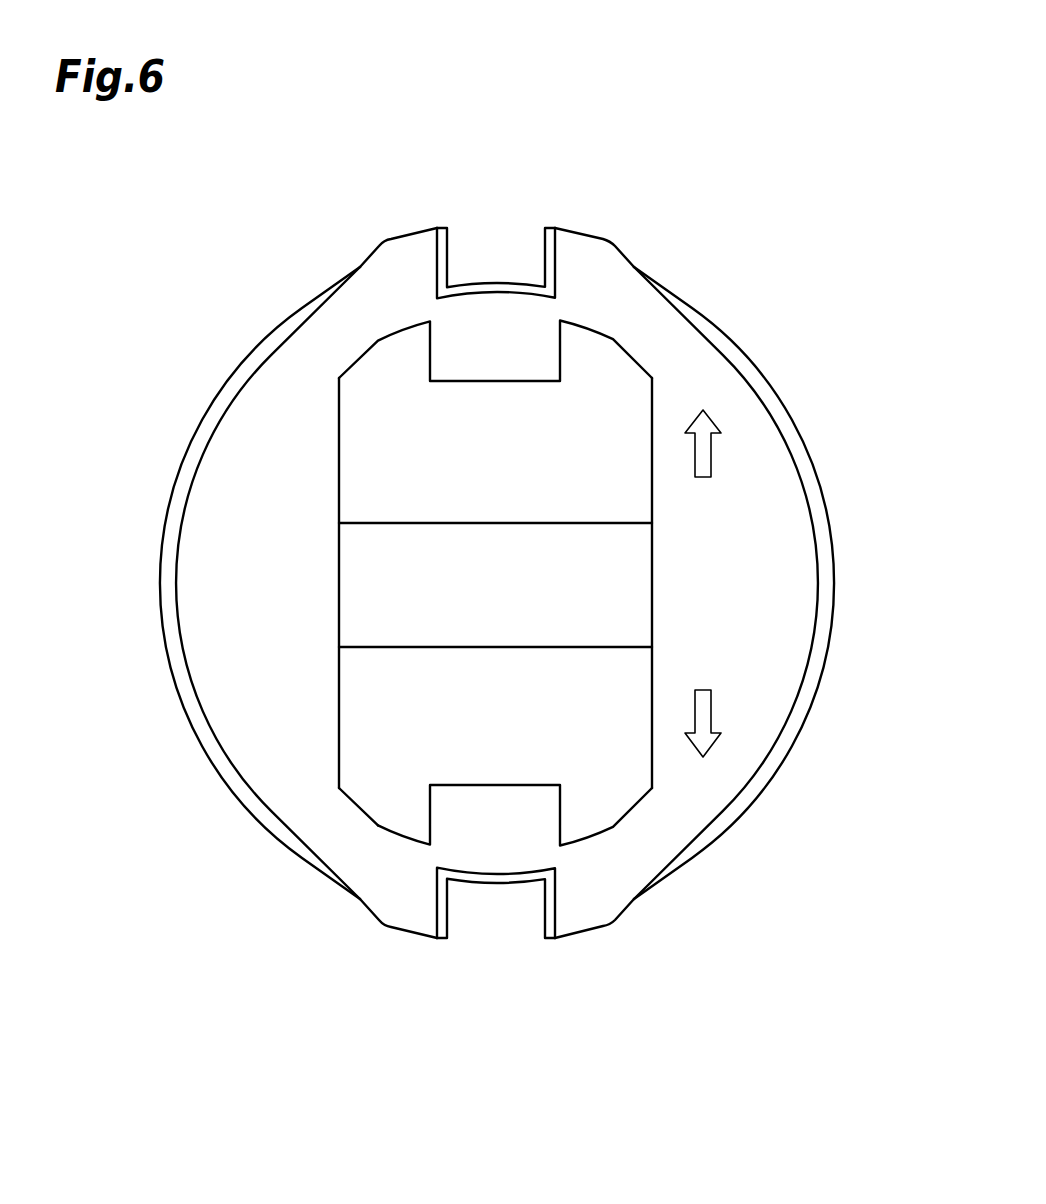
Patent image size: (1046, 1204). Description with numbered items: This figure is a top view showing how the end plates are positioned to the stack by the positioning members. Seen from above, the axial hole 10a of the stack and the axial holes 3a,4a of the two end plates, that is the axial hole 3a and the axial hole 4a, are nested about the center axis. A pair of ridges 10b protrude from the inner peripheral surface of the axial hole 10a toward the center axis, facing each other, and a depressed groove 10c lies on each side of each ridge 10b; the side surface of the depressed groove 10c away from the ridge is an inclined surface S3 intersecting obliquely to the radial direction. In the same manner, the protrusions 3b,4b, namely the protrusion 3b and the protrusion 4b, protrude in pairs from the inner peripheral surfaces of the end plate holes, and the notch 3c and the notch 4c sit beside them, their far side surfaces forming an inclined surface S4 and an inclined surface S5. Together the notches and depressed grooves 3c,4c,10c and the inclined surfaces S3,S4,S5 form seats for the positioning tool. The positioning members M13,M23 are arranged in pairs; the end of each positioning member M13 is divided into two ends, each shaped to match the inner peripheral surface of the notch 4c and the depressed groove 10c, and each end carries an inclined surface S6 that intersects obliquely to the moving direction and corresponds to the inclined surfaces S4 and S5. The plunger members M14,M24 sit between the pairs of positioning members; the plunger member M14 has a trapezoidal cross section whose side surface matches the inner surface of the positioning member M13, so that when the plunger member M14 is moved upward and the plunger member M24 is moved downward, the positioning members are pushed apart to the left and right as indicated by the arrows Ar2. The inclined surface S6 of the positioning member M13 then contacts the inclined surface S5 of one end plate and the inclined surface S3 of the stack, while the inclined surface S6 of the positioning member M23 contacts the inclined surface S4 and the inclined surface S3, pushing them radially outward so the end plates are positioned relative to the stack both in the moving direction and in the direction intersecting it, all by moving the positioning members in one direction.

The axial holes 3a,4a is at (497, 580).
The axial hole 3a is at (497, 580).
The axial hole 4a is at (258, 372).
The protrusions 3b,4b is at (541, 217).
The protrusion 3b is at (541, 217).
The protrusion 4b is at (547, 253).
The notches and depressed grooves 3c,4c,10c is at (315, 229).
The notch 3c is at (315, 229).
The notch 4c is at (315, 229).
The depressed groove 10c is at (399, 243).
The axial hole 10a is at (184, 517).
The ridge 10b is at (557, 279).
The positioning members M13,M23 is at (191, 583).
The positioning member M13 is at (191, 583).
The positioning member M23 is at (339, 480).
The plunger members M14,M24 is at (806, 583).
The plunger member M14 is at (806, 583).
The plunger member M24 is at (652, 593).
The inclined surfaces S3,S4,S5 is at (387, 959).
The inclined surface S3 is at (387, 959).
The inclined surface S4 is at (387, 959).
The inclined surface S5 is at (366, 912).
The inclined surface S6 is at (358, 809).
The arrows Ar2 is at (713, 457).